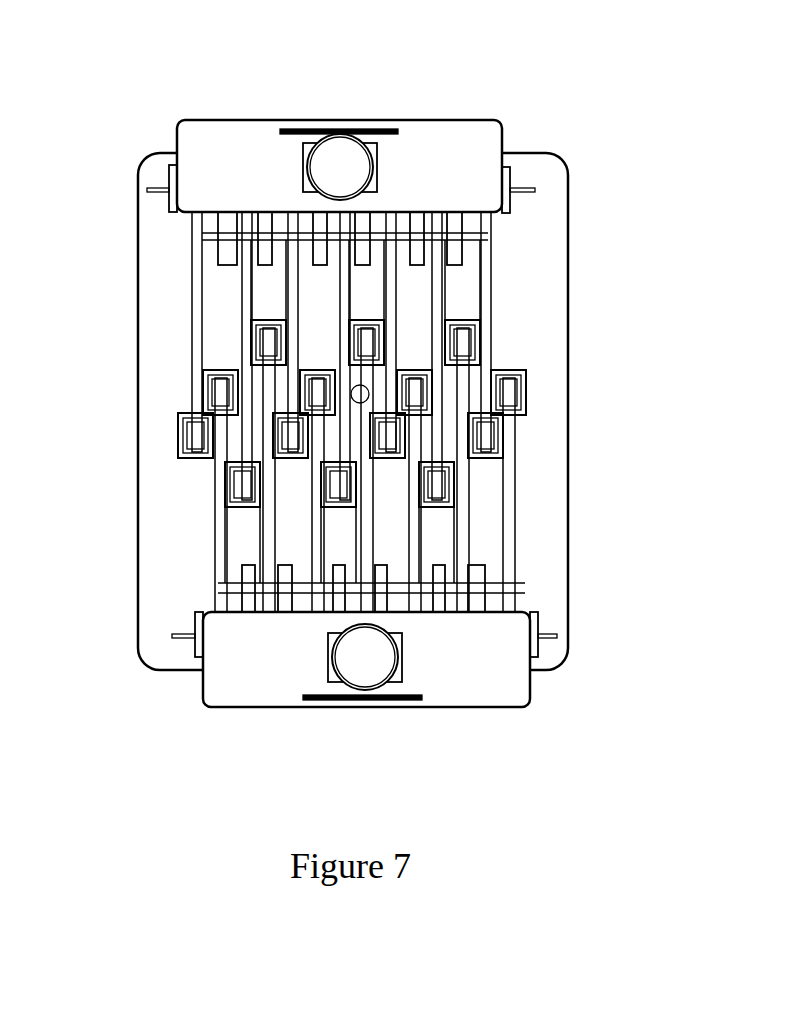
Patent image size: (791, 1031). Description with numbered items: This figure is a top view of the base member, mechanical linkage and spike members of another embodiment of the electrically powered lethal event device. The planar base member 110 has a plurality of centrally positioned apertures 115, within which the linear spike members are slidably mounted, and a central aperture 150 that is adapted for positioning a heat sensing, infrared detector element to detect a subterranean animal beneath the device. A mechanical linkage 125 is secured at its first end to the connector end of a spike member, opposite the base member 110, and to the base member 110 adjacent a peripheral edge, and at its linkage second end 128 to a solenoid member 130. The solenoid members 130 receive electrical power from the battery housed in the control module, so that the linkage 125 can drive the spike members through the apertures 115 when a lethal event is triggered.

The base member 110 is at (542, 242).
The linkage second end 128 is at (450, 155).
The solenoid member 130 is at (335, 157).
The mechanical linkage 125 is at (508, 535).
The apertures 115 is at (520, 397).
The central aperture 150 is at (372, 386).